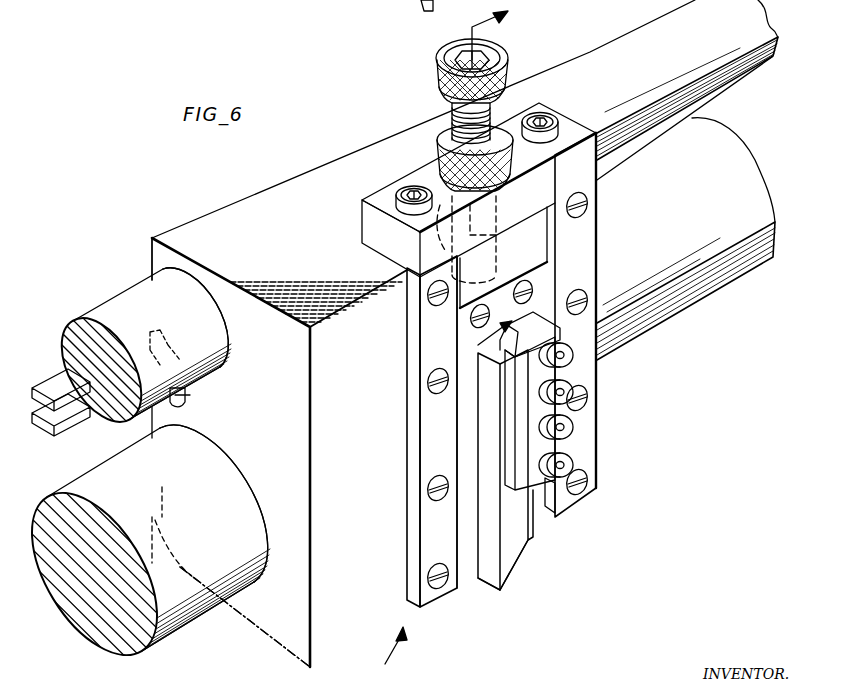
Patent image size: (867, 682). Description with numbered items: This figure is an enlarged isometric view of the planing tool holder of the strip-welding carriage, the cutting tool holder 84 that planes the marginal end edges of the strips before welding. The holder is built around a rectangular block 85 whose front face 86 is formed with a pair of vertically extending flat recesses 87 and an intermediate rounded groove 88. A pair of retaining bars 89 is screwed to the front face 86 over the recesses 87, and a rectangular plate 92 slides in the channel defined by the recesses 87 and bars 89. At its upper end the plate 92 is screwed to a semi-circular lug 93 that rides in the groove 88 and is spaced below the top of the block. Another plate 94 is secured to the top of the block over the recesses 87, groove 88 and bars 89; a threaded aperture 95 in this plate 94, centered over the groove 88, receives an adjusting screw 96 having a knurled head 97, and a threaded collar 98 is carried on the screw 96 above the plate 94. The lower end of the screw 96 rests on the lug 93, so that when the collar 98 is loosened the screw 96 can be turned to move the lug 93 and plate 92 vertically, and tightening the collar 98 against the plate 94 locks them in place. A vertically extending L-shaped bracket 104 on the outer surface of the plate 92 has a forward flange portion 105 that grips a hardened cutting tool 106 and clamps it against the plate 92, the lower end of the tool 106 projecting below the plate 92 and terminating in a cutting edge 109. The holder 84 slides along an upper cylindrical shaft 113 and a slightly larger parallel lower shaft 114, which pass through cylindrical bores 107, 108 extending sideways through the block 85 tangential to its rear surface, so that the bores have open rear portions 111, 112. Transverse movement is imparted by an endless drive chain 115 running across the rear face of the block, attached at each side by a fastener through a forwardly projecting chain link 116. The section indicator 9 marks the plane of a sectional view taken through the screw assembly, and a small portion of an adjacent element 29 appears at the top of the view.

The section line arrows 9 is at (498, 173).
The housing 29 is at (421, 5).
The cutting tool holder 84 is at (386, 653).
The rectangular block 85 is at (284, 646).
The front face 86 is at (366, 463).
The flat recesses 87 is at (400, 242).
The rounded groove 88 is at (547, 263).
The retaining bars 89 is at (432, 512).
The rectangular plate 92 is at (467, 340).
The semi-circular lug 93 is at (456, 312).
The plate 94 is at (376, 198).
The threaded aperture 95 is at (496, 201).
The adjusting screw 96 is at (452, 121).
The knurled head 97 is at (439, 75).
The threaded collar 98 is at (440, 150).
The L-shaped bracket 104 is at (540, 333).
The forward flange portion 105 is at (548, 447).
The cutting tool 106 is at (485, 424).
The cylindrical bore 107 is at (190, 290).
The cylindrical bore 108 is at (210, 448).
The cutting edge 109 is at (490, 590).
The open rear portion 111 is at (150, 280).
The open rear portion 112 is at (162, 488).
The cylindrical shaft 113 is at (122, 308).
The lower shaft 114 is at (238, 486).
The endless drive chain 115 is at (55, 390).
The chain link 116 is at (188, 400).